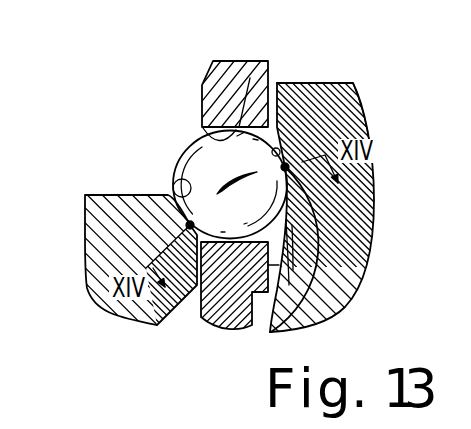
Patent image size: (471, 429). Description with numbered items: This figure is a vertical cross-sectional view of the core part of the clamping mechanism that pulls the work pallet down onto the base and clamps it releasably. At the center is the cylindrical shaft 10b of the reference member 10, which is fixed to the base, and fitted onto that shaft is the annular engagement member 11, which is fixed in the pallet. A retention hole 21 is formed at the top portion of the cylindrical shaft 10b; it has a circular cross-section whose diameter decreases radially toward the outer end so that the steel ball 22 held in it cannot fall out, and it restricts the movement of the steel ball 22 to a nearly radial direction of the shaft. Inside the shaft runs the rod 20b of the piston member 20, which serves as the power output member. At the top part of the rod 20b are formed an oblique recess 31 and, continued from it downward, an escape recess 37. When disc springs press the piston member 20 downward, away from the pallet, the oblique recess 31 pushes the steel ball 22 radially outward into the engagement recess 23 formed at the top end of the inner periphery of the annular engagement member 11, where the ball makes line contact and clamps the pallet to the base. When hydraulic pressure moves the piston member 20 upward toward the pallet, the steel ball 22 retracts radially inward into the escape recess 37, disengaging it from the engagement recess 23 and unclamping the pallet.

The reference member 10 is at (228, 316).
The cylindrical shaft 10b is at (230, 74).
The annular engagement member 11 is at (117, 208).
The piston member 20 is at (337, 310).
The rod 20b is at (317, 97).
The retention hole 21 is at (206, 137).
The steel ball 22 is at (275, 148).
The engagement recess 23 is at (177, 176).
The oblique recess 31 is at (289, 165).
The escape recess 37 is at (322, 243).